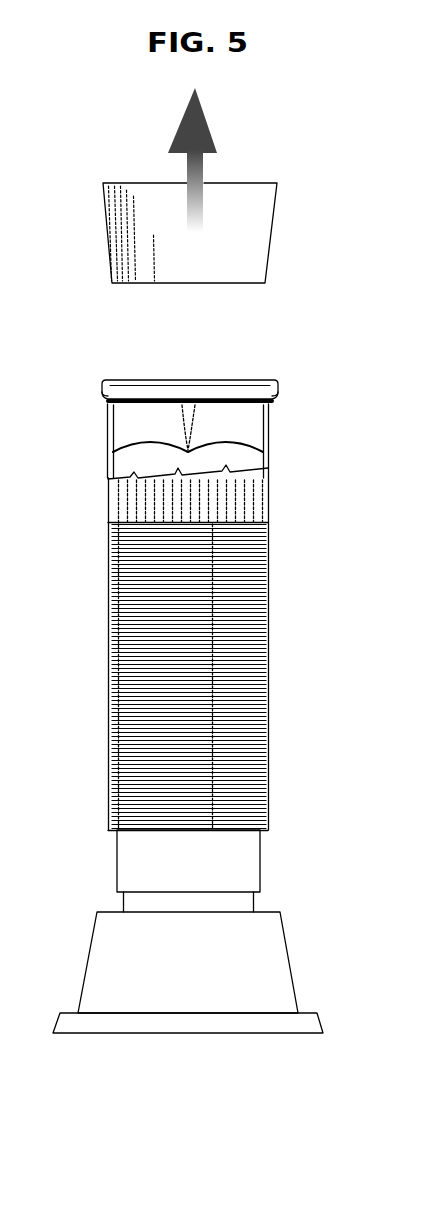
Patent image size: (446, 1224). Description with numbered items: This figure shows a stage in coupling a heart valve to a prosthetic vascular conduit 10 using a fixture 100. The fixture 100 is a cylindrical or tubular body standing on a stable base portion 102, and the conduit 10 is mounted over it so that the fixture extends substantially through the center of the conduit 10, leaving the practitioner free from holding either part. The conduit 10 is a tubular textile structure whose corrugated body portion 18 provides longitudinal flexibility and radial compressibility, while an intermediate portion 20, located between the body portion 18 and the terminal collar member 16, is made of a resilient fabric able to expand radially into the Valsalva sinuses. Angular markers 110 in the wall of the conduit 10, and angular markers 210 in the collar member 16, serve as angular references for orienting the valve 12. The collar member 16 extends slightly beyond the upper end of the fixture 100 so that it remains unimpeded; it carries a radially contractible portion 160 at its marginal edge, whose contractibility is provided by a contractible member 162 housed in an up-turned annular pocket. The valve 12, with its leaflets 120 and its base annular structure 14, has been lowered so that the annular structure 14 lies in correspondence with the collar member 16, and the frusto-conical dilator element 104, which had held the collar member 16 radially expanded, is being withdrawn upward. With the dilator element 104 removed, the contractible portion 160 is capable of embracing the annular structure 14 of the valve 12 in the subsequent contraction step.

The prosthetic vascular conduit 10 is at (202, 598).
The valve 12 is at (148, 388).
The base annular structure 14 is at (230, 400).
The terminal collar member 16 is at (272, 417).
The body portion 18 is at (107, 660).
The intermediate portion 20 is at (128, 492).
The fixture 100 is at (274, 867).
The stable base portion 102 is at (270, 962).
The dilator element 104 is at (245, 229).
The angular markers 110 is at (108, 738).
The valve leaflets 120 is at (148, 434).
The radially contractible portion 160 is at (284, 391).
The contractible member 162 is at (102, 398).
The angular markers 210 is at (123, 377).